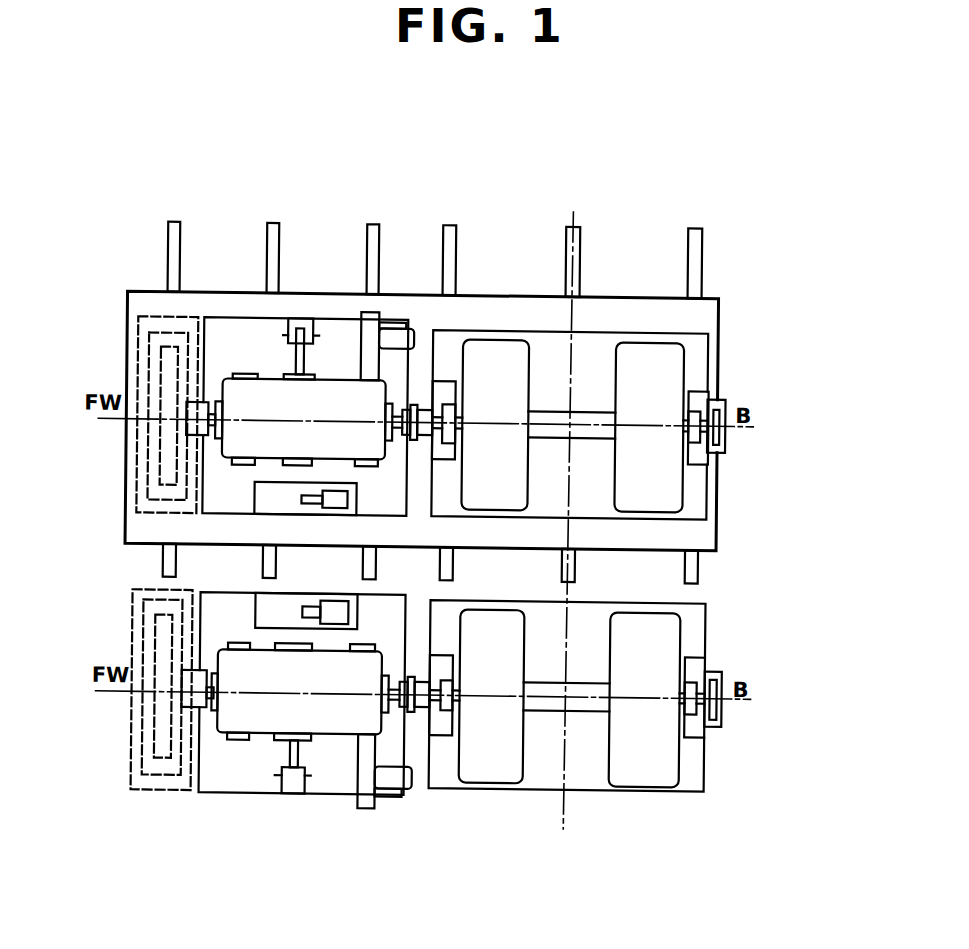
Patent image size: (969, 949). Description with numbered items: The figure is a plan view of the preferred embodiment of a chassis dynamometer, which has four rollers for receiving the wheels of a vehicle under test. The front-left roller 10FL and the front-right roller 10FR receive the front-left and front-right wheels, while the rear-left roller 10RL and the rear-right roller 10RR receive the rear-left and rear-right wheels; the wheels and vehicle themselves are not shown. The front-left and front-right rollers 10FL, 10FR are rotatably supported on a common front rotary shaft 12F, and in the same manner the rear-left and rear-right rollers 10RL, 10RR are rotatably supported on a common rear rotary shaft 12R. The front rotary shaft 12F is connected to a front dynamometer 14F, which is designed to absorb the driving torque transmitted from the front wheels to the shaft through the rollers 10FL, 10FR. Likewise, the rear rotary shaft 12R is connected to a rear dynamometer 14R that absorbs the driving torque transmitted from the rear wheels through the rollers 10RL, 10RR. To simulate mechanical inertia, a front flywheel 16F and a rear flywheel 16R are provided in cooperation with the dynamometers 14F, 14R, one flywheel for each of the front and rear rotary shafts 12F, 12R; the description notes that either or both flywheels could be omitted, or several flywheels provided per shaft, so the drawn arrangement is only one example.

The rear-right roller 10RR is at (498, 361).
The rear-left roller 10RL is at (658, 366).
The front-right roller 10FR is at (490, 762).
The front-left roller 10FL is at (650, 767).
The rear rotary shaft 12R is at (588, 422).
The front rotary shaft 12F is at (588, 701).
The rear dynamometer 14R is at (246, 402).
The front dynamometer 14F is at (269, 715).
The rear flywheel 16R is at (164, 448).
The front flywheel 16F is at (165, 740).